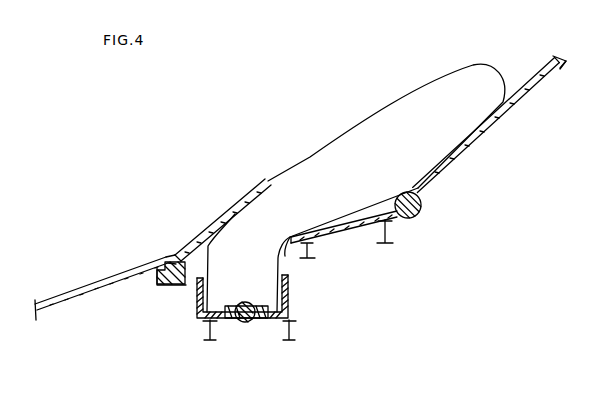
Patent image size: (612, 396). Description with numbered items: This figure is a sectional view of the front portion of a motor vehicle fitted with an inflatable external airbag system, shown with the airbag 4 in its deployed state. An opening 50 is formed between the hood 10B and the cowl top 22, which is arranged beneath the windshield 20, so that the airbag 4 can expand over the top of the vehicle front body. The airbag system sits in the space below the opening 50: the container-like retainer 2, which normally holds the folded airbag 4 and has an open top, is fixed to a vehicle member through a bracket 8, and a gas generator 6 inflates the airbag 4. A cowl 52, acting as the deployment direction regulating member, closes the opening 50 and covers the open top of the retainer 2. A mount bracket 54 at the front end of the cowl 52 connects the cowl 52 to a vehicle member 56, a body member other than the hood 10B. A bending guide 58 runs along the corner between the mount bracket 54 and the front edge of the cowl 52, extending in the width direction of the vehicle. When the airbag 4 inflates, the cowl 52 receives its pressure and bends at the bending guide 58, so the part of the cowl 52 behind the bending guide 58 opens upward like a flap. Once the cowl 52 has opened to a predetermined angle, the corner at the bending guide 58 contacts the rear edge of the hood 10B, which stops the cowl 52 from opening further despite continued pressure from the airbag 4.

The airbag 4 is at (439, 81).
The windshield 20 is at (554, 66).
The cowl top 22 is at (376, 242).
The opening 50 is at (291, 258).
The retainer 2 is at (290, 285).
The gas generator 6 is at (245, 327).
The bracket 8 is at (204, 338).
The hood 10B is at (105, 266).
The cowl 52 is at (227, 211).
The bending guide 58 is at (173, 249).
The mount bracket 54 is at (156, 281).
The vehicle member 56 is at (173, 290).